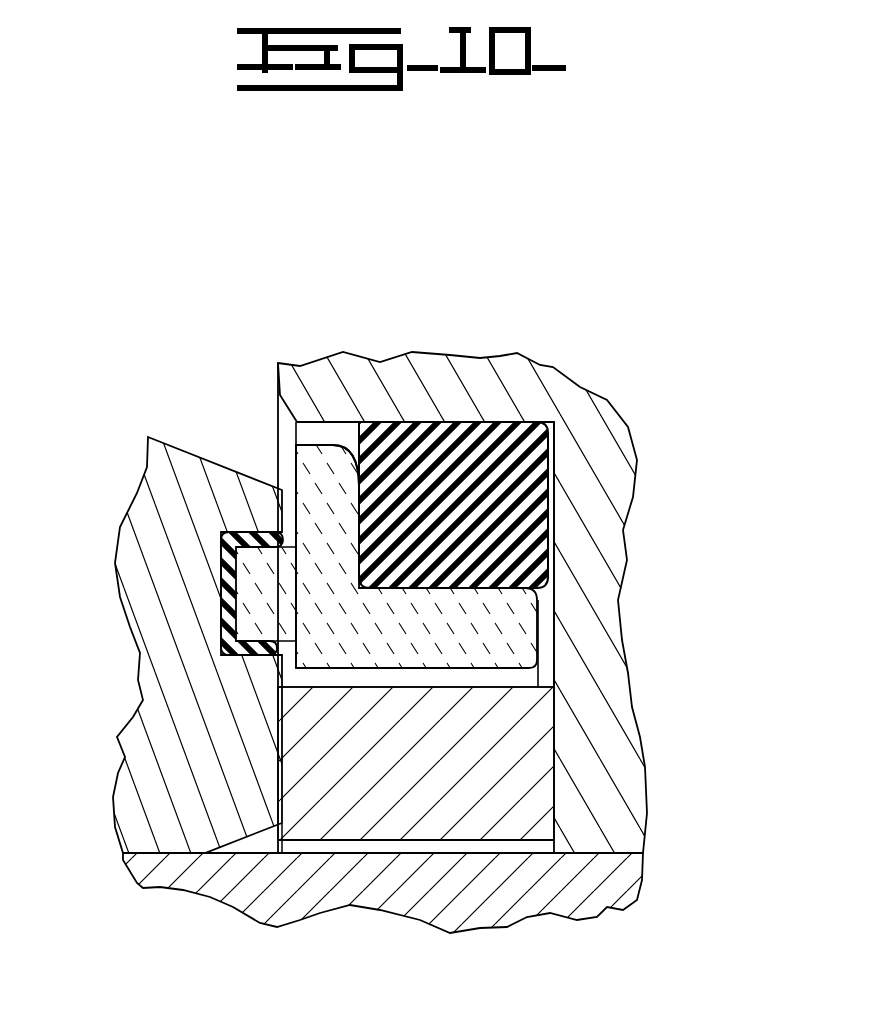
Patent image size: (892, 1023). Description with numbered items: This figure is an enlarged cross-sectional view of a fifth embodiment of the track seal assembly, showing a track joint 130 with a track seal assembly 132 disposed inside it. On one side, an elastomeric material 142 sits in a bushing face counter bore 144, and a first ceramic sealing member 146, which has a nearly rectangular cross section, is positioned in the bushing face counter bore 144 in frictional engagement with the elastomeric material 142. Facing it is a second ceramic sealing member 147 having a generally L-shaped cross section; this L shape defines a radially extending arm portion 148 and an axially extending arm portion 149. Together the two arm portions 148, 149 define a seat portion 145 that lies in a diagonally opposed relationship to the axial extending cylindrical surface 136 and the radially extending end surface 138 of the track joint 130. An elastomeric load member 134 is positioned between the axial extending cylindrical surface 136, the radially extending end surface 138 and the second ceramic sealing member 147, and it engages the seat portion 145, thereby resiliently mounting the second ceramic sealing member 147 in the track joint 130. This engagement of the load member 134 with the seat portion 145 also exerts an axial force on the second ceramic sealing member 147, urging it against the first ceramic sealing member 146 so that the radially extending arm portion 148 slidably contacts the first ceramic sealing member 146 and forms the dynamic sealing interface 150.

The track joint 130 is at (267, 460).
The track seal assembly 132 is at (278, 363).
The elastomeric load member 134 is at (495, 432).
The axial extending cylindrical surface 136 is at (345, 435).
The radially extending end surface 138 is at (555, 453).
The elastomeric material 142 is at (247, 648).
The bushing face counter bore 144 is at (213, 590).
The seat portion 145 is at (460, 542).
The first ceramic sealing member 146 is at (257, 620).
The second ceramic sealing member 147 is at (507, 678).
The radially extending arm portion 148 is at (310, 503).
The axially extending arm portion 149 is at (508, 633).
The dynamic sealing interface 150 is at (293, 586).